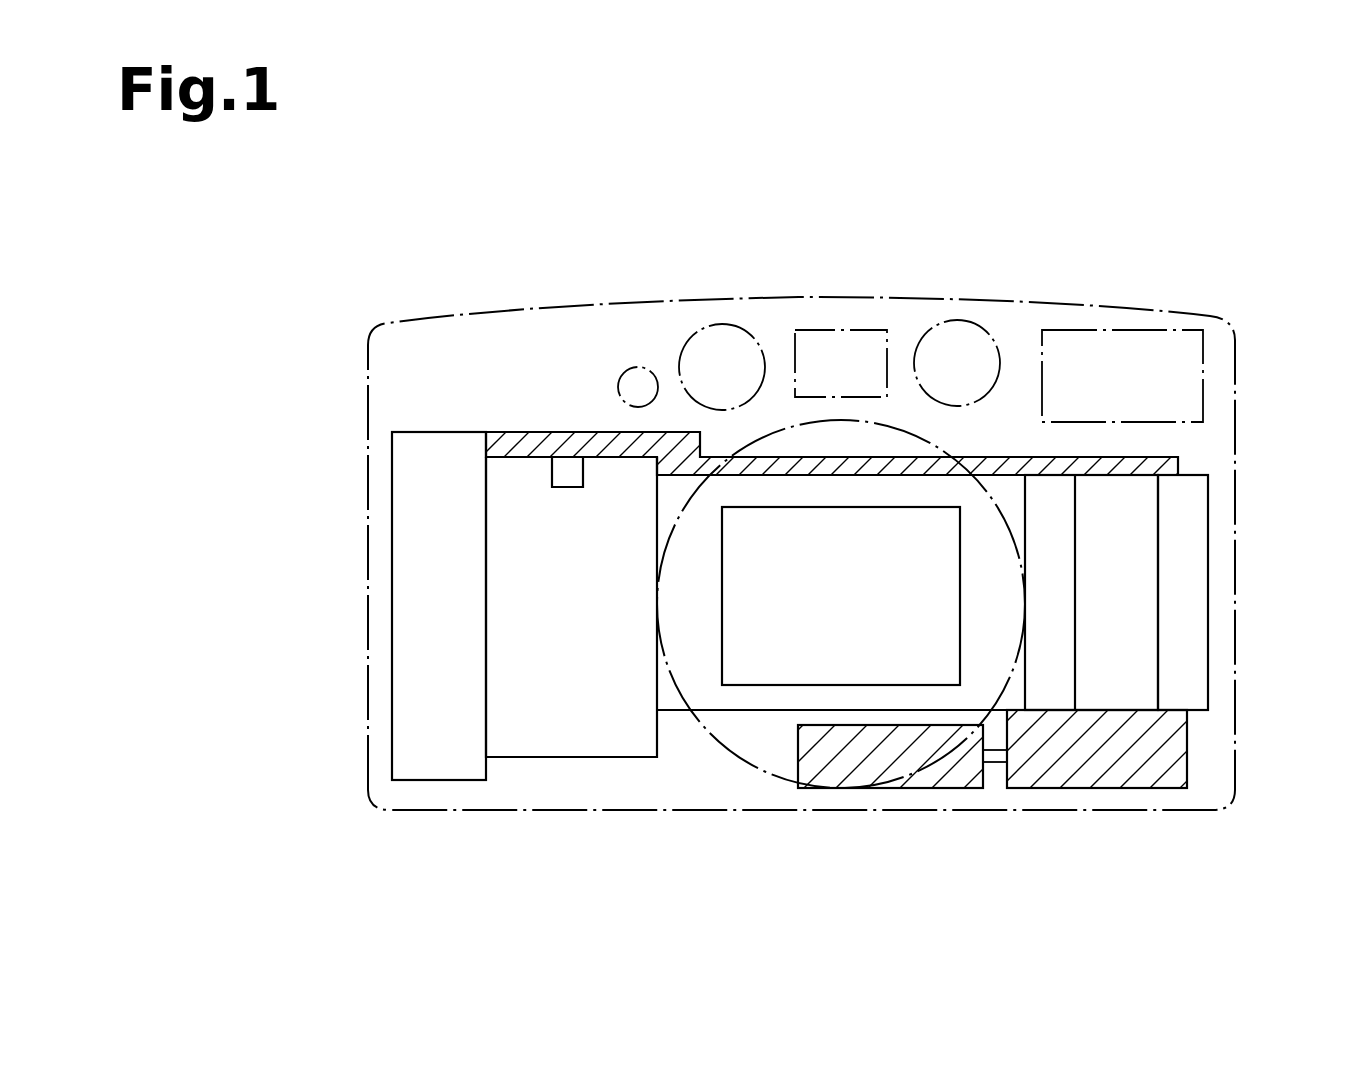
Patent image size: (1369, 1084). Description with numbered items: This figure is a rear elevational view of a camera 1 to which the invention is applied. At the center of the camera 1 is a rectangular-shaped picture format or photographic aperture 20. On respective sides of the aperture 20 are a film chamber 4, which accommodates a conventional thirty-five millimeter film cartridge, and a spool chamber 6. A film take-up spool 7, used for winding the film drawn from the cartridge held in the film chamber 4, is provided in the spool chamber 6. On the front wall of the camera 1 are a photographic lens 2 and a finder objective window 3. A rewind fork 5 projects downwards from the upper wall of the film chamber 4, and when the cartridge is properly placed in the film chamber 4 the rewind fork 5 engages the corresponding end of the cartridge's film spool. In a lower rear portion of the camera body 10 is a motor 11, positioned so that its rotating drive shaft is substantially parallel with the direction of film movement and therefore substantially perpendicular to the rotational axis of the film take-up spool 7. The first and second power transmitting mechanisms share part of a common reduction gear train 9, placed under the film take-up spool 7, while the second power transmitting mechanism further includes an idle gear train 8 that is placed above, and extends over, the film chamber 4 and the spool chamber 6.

The camera 1 is at (1240, 248).
The photographic lens 2 is at (752, 772).
The finder objective window 3 is at (838, 330).
The film chamber 4 is at (520, 590).
The rewind fork 5 is at (567, 477).
The spool chamber 6 is at (1175, 553).
The film take-up spool 7 is at (1122, 580).
The idle gear train 8 is at (605, 440).
The common reduction gear train 9 is at (1124, 760).
The camera body 10 is at (1035, 295).
The motor 11 is at (946, 773).
The photographic aperture 20 is at (842, 673).